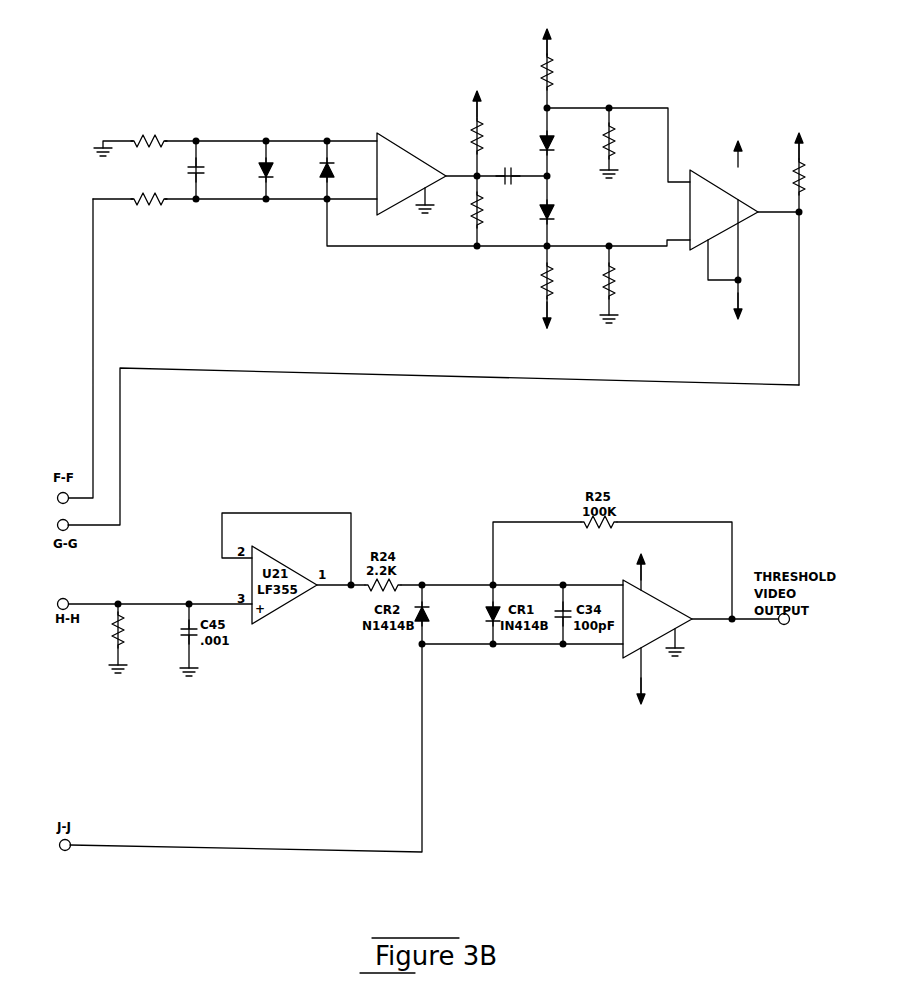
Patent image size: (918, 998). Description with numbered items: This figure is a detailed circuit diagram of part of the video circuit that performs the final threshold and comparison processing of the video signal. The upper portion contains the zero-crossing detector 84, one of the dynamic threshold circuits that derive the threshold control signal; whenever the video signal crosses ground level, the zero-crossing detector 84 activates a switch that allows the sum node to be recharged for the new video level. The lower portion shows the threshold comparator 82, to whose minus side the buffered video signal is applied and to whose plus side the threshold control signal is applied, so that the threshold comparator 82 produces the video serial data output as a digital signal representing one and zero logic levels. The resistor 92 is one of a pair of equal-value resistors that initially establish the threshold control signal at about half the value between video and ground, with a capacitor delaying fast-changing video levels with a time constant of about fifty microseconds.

The zero-crossing detector 84 is at (438, 292).
The threshold comparator 82 is at (631, 660).
The equal-value resistor 92 is at (114, 638).